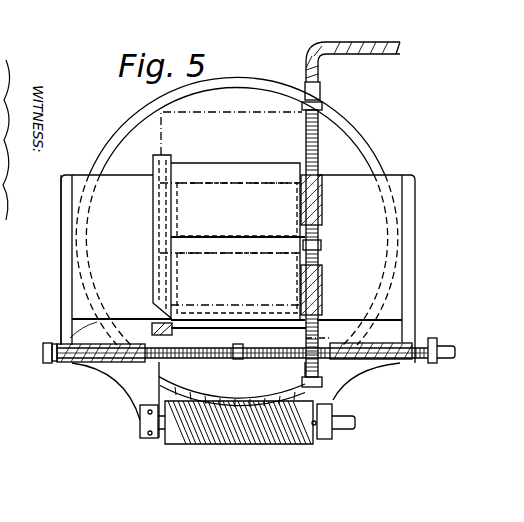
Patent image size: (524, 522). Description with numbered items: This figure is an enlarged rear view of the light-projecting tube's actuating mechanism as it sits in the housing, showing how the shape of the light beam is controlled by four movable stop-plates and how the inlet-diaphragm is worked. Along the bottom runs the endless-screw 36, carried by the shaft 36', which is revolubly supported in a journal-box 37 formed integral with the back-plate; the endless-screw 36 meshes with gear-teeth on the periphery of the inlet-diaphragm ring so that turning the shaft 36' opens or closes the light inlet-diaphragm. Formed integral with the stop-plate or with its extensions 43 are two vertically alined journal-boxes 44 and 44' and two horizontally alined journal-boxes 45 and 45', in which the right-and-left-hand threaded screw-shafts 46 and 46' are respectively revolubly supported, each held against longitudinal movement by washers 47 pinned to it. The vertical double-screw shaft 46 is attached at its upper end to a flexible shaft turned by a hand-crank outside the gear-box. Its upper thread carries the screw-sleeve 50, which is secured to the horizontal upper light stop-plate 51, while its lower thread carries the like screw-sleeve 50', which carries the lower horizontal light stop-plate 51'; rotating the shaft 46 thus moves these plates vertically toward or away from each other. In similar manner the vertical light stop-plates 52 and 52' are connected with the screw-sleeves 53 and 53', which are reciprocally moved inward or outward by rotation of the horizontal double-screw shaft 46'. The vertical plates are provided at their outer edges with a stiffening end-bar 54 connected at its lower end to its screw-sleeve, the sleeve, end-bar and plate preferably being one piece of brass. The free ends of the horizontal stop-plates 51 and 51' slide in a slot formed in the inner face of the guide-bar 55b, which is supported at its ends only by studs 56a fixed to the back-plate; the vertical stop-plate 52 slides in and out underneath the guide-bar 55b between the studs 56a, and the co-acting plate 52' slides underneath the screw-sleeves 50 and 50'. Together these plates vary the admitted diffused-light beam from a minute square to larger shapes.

The endless-screw 36 is at (235, 436).
The shaft 36' is at (352, 410).
The journal-box 37 is at (140, 422).
The extension 43 is at (102, 359).
The journal-box 44 is at (352, 75).
The journal-box 44' is at (237, 242).
The journal-box 45 is at (214, 352).
The journal-box 45' is at (459, 336).
The vertical double-screw shaft 46 is at (326, 243).
The horizontal double-screw shaft 46' is at (242, 365).
The washer 47 is at (323, 112).
The screw-sleeve 50 is at (331, 200).
The screw-sleeve 50' is at (333, 286).
The upper light stop-plate 51 is at (232, 200).
The lower light stop-plate 51' is at (233, 282).
The vertical light stop-plate 52 is at (116, 260).
The vertical light stop-plate 52' is at (360, 269).
The screw-sleeve 53 is at (101, 376).
The screw-sleeve 53' is at (372, 369).
The stiffening end-bar 54 is at (61, 303).
The guide-bar 55b is at (153, 163).
The stud 56a is at (152, 331).